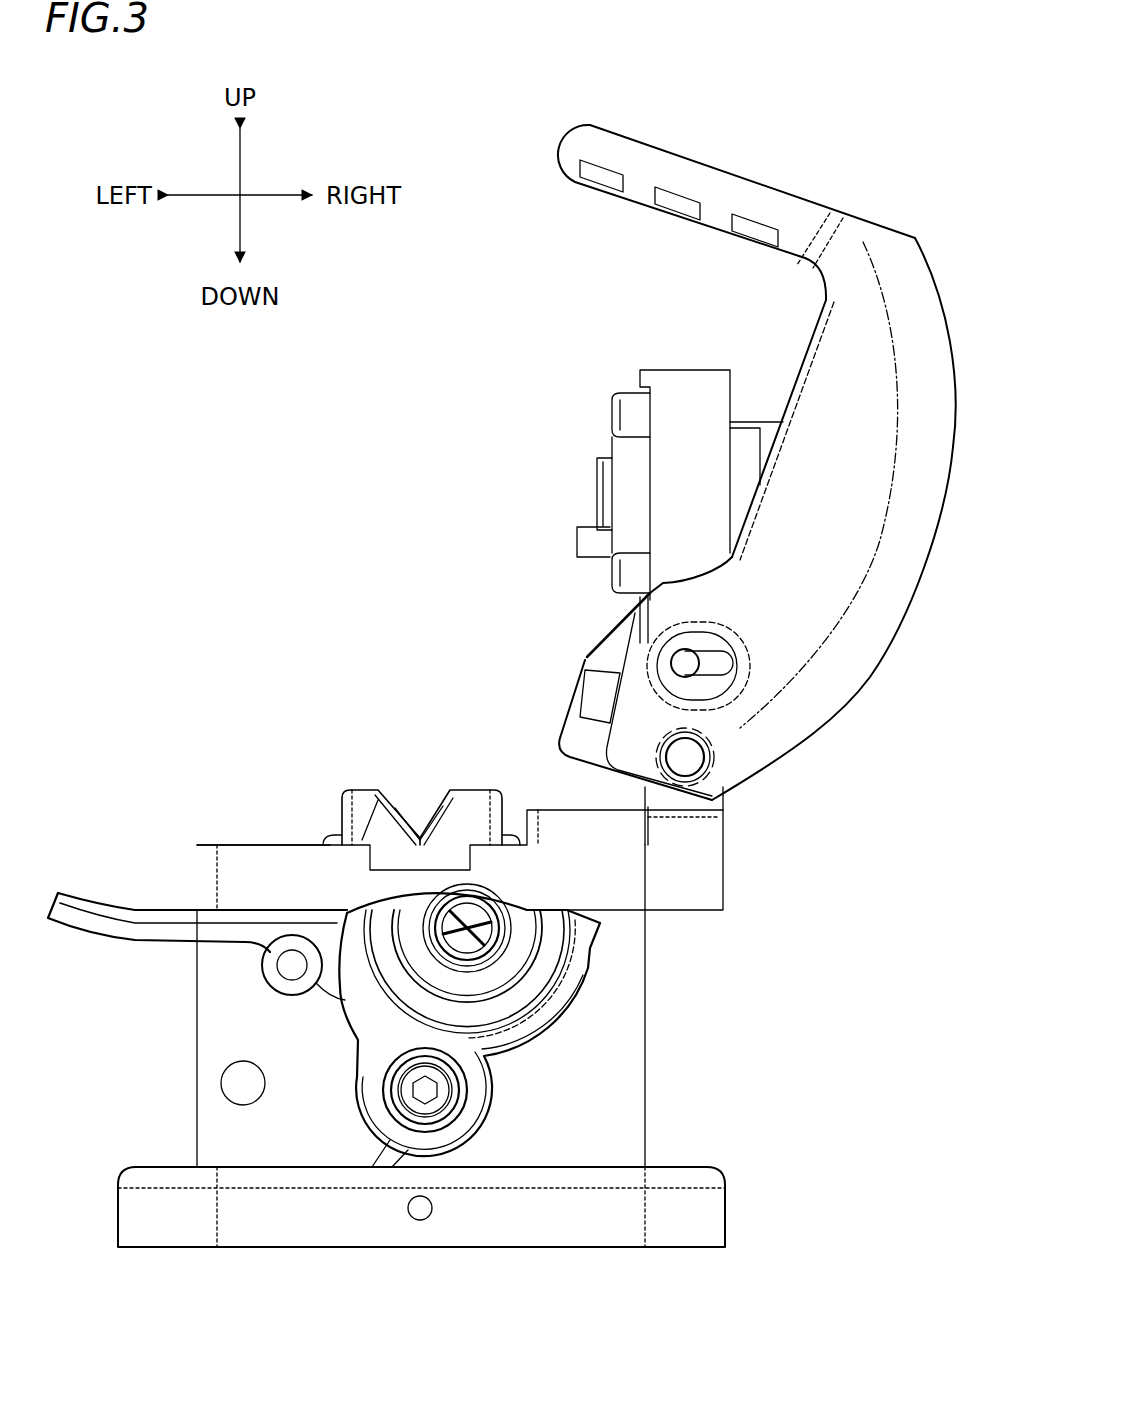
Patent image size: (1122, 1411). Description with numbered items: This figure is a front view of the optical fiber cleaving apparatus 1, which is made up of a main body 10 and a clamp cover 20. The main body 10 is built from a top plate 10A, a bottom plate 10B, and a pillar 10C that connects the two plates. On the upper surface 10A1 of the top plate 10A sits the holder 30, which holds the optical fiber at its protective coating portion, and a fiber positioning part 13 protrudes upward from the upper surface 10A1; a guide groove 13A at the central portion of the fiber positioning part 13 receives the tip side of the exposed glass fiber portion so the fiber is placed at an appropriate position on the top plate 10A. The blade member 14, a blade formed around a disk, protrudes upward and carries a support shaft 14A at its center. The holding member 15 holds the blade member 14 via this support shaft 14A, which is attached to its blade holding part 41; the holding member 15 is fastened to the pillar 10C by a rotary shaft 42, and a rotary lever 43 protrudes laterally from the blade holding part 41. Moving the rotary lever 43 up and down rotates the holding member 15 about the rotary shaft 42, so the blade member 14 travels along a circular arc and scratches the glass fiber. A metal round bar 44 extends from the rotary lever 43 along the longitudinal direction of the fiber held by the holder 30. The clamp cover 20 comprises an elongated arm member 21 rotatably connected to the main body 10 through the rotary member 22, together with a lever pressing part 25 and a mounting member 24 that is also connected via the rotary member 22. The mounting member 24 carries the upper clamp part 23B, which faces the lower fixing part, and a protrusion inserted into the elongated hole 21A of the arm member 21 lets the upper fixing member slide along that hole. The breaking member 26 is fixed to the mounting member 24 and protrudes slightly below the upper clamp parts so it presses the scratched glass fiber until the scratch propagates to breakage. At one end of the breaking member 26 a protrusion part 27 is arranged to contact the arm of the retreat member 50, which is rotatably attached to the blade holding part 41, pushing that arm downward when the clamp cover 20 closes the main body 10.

The optical fiber cleaving apparatus 1 is at (365, 425).
The main body 10 is at (258, 750).
The top plate 10A is at (230, 875).
The upper surface 10A1 is at (245, 845).
The bottom plate 10B is at (165, 1222).
The pillar 10C is at (222, 1010).
The fiber positioning part 13 is at (385, 822).
The guide groove 13A is at (418, 835).
The blade member 14 is at (553, 940).
The support shaft 14A is at (482, 940).
The holding member 15 is at (535, 1062).
The clamp cover 20 is at (706, 128).
The arm member 21 is at (914, 534).
The elongated hole 21A is at (722, 660).
The rotary member 22 is at (687, 760).
The upper clamp part 23B is at (600, 470).
The mounting member 24 is at (690, 385).
The lever pressing part 25 is at (768, 208).
The breaking member 26 is at (597, 490).
The protrusion part 27 is at (580, 540).
The holder 30 is at (368, 787).
The blade holding part 41 is at (545, 1030).
The rotary shaft 42 is at (437, 1103).
The rotary lever 43 is at (90, 925).
The round bar 44 is at (290, 965).
The retreat member 50 is at (573, 958).